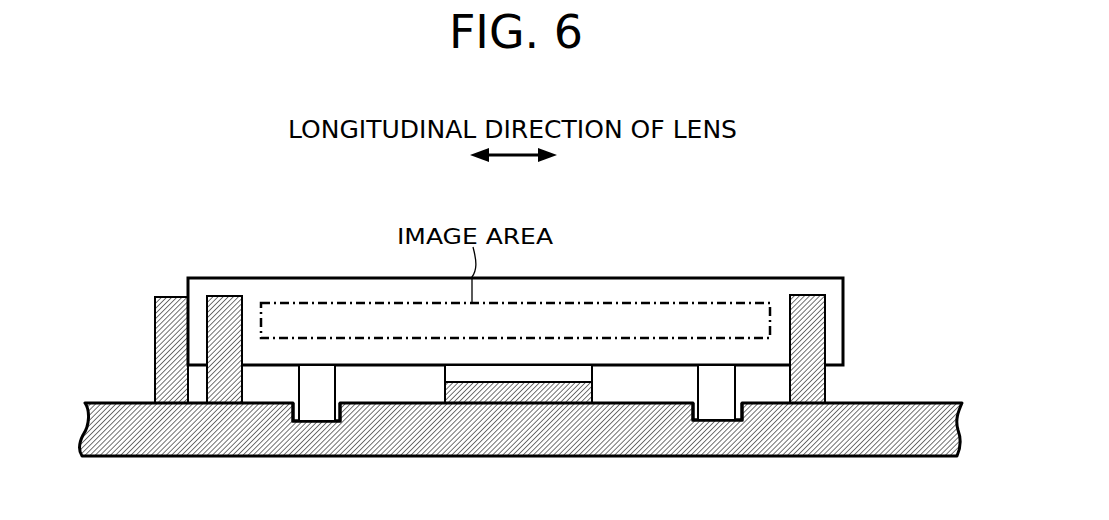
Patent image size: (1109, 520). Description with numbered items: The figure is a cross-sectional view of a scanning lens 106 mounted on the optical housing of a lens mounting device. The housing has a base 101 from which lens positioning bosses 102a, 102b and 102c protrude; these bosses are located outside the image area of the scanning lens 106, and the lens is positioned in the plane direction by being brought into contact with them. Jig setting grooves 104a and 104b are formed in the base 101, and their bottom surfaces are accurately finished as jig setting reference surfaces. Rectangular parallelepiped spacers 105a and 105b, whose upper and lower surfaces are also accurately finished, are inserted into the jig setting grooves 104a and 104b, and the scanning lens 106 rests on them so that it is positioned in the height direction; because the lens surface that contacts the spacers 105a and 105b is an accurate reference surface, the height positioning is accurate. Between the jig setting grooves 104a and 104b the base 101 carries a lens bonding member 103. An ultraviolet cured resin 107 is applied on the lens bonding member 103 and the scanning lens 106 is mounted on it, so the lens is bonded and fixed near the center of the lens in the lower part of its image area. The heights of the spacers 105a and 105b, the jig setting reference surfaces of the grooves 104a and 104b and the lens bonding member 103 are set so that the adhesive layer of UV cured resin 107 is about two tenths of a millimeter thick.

The base 101 is at (895, 405).
The lens positioning boss 102a is at (805, 302).
The lens positioning boss 102b is at (222, 302).
The lens positioning boss 102c is at (162, 328).
The lens bonding member 103 is at (584, 393).
The jig setting groove 104a is at (748, 420).
The jig setting groove 104b is at (289, 421).
The spacer 105a is at (717, 375).
The spacer 105b is at (326, 386).
The scanning lens 106 is at (660, 284).
The UV cured resin 107 is at (558, 372).